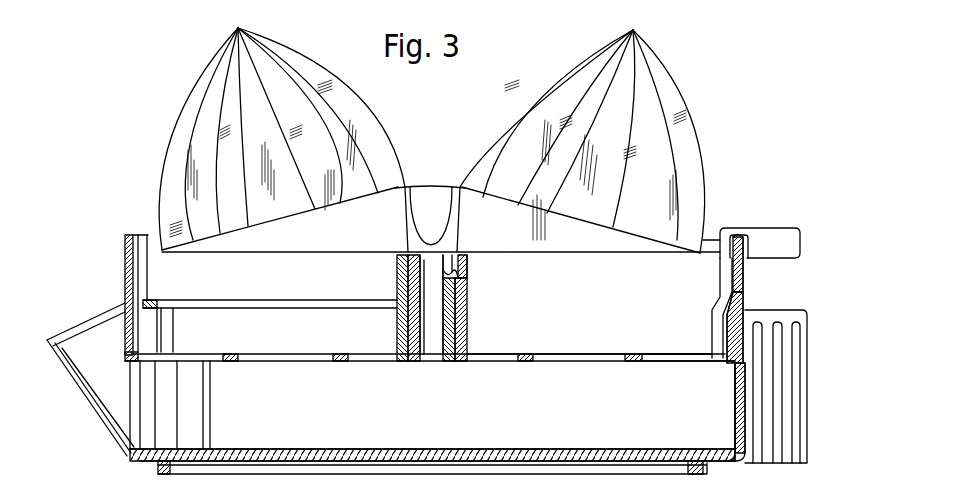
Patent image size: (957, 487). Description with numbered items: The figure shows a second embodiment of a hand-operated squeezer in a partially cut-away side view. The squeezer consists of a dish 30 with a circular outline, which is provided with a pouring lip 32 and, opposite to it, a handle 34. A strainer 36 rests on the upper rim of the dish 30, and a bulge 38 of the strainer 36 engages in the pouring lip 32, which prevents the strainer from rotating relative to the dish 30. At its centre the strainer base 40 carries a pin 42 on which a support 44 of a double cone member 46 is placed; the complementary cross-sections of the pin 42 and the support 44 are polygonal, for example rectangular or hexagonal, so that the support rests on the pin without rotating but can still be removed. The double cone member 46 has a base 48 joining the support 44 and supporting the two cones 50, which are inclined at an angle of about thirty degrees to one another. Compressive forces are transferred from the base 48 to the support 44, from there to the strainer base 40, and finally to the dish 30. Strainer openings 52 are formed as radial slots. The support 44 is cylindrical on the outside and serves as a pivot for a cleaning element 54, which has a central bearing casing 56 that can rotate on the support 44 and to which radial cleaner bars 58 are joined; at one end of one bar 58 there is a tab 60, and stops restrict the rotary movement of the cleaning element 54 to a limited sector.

The dish 30 is at (282, 448).
The pouring lip 32 is at (78, 337).
The handle 34 is at (768, 315).
The strainer 36 is at (124, 264).
The bulge 38 is at (126, 355).
The strainer base 40 is at (232, 352).
The pin 42 is at (441, 348).
The support 44 is at (463, 327).
The double cone member 46 is at (433, 186).
The base 48 is at (283, 246).
The cones 50 is at (362, 122).
The strainer openings 52 is at (270, 358).
The cleaning element 54 is at (656, 361).
The central bearing casing 56 is at (397, 341).
The radial cleaner bars 58 is at (556, 340).
The tab 60 is at (780, 233).